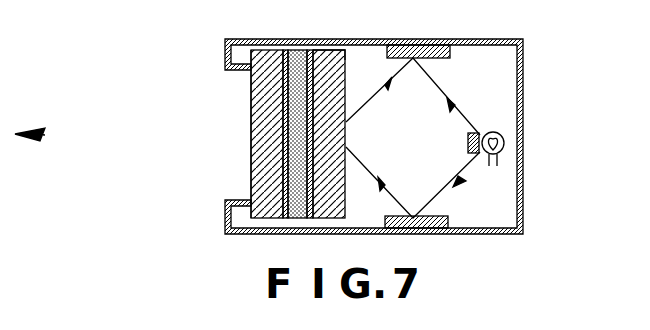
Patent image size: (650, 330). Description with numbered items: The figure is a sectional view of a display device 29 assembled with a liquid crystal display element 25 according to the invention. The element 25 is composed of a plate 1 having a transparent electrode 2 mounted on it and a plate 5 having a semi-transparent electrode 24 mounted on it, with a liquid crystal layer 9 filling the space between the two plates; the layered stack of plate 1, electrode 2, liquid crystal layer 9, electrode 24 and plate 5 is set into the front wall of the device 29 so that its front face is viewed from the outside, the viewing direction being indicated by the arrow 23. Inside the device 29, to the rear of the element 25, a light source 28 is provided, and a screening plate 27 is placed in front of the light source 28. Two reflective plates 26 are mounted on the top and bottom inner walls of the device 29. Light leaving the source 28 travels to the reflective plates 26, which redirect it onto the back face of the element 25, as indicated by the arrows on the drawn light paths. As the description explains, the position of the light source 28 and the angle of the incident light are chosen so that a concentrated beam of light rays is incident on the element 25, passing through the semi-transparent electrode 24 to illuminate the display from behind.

The plate 1 is at (262, 62).
The transparent electrode 2 is at (287, 62).
The liquid crystal layer 9 is at (300, 75).
The semi-transparent electrode 24 is at (325, 68).
The plate 5 is at (345, 60).
The direction arrow 23 is at (38, 145).
The element 25 is at (250, 140).
The reflective plates 26 is at (447, 60).
The screening plate 27 is at (467, 144).
The light source 28 is at (504, 147).
The display device 29 is at (523, 196).